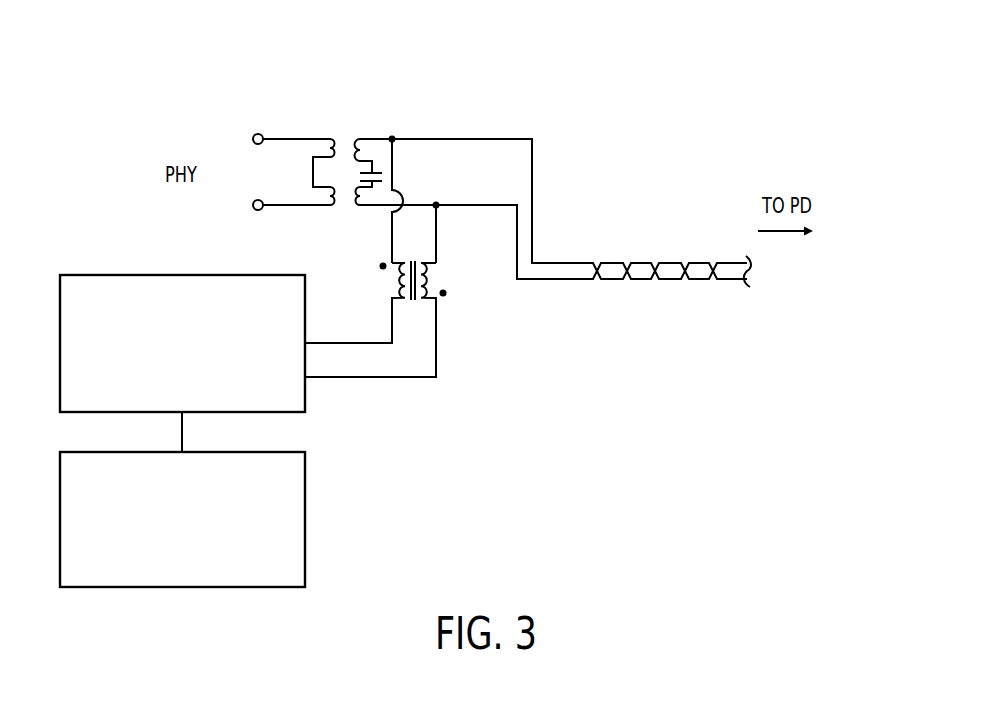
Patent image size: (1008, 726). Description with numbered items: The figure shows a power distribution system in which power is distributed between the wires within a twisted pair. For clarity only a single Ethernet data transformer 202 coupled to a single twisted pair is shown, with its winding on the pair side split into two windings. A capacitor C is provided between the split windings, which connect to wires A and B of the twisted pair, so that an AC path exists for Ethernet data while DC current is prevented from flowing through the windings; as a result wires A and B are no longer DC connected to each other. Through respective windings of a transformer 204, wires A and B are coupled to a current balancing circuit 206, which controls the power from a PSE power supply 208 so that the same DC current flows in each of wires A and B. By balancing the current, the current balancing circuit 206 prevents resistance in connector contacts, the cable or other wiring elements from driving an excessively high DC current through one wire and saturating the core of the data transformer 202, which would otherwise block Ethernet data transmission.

The Ethernet data transformer 202 is at (332, 130).
The transformer 204 is at (448, 308).
The current balancing circuit 206 is at (128, 275).
The PSE power supply 208 is at (305, 518).
The wire A is at (356, 142).
The wire B is at (370, 208).
The capacitor C is at (378, 167).